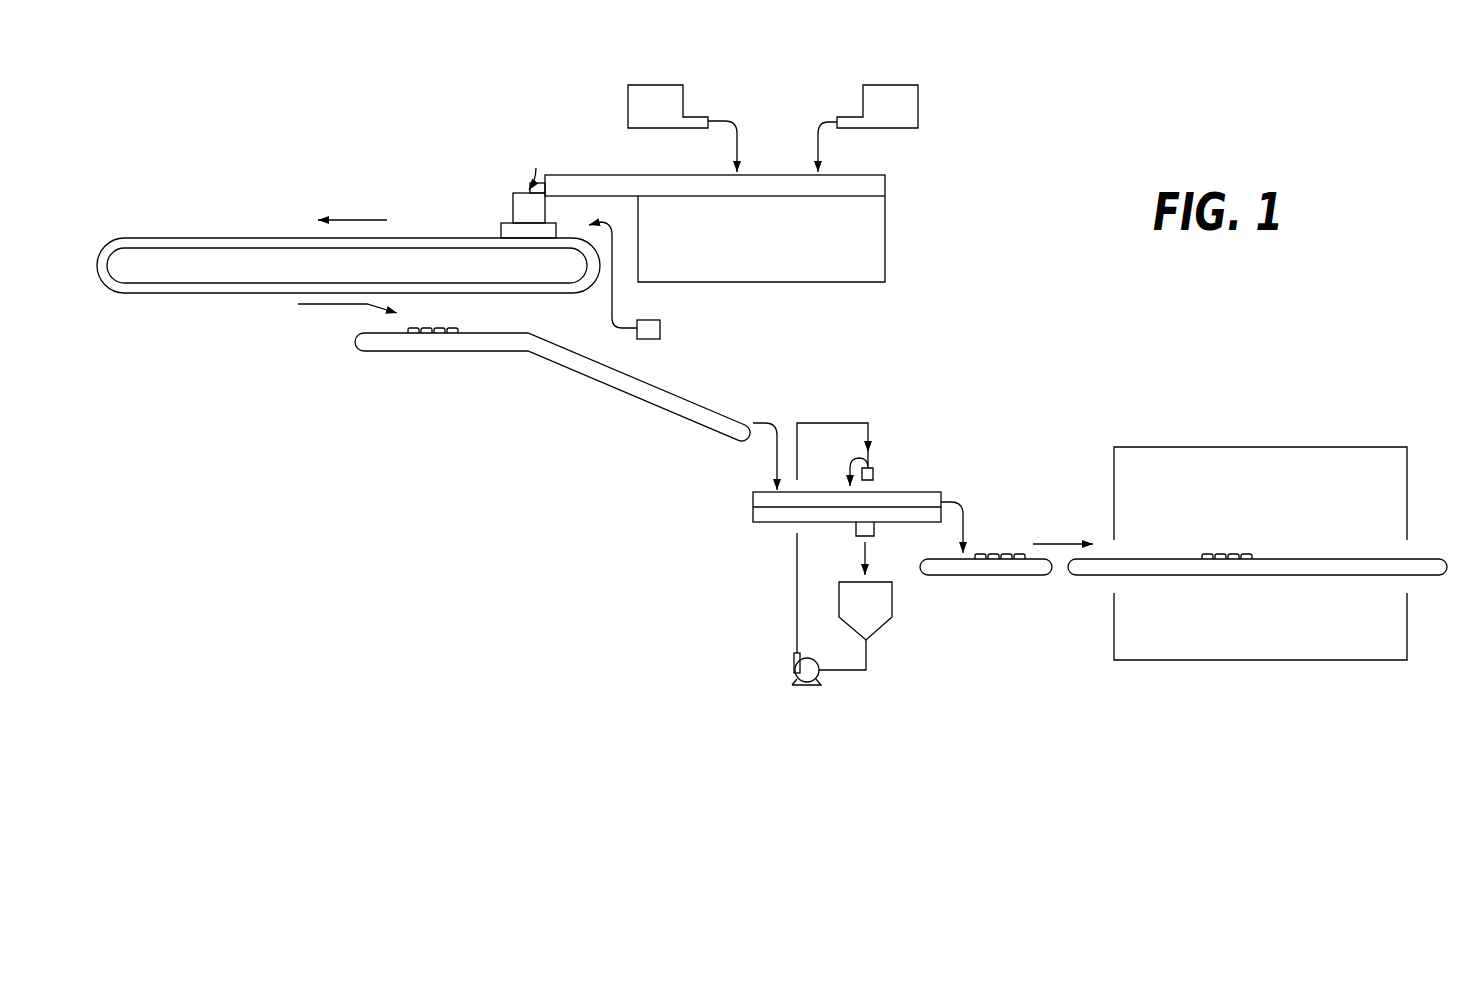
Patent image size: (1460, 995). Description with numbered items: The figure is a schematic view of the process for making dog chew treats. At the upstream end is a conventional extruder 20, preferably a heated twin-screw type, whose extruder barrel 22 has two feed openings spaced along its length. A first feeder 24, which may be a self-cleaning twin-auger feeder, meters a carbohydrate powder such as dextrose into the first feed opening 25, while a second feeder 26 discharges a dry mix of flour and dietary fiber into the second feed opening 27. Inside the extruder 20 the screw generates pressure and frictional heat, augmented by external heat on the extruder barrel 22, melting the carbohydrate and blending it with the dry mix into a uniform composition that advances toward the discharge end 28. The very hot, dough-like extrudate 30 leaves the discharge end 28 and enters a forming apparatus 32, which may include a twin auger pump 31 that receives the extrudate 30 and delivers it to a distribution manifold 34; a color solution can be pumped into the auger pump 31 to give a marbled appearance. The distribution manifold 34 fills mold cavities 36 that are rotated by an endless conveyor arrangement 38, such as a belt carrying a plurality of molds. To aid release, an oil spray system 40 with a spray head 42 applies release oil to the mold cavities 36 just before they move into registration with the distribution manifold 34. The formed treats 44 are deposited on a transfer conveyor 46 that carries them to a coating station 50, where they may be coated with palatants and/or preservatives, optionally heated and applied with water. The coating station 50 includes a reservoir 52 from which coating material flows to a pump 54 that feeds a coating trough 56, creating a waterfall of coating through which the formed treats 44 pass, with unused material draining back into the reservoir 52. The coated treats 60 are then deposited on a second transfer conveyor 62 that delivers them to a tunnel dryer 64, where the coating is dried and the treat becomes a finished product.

The extruder 20 is at (865, 247).
The extruder barrel 22 is at (863, 187).
The first feeder 24 is at (892, 85).
The first feed opening 25 is at (821, 174).
The second feeder 26 is at (645, 85).
The second feed opening 27 is at (744, 172).
The discharge end 28 is at (536, 168).
The extrudate 30 is at (530, 182).
The twin auger pump 31 is at (513, 208).
The forming apparatus 32 is at (230, 262).
The distribution manifold 34 is at (501, 230).
The mold cavities 36 is at (422, 246).
The endless conveyor arrangement 38 is at (167, 238).
The oil spray system 40 is at (660, 328).
The spray head 42 is at (590, 208).
The formed treats 44 is at (425, 333).
The transfer conveyor 46 is at (497, 342).
The coating station 50 is at (928, 498).
The reservoir 52 is at (892, 599).
The pump 54 is at (795, 673).
The coating trough 56 is at (875, 472).
The coated treats 60 is at (993, 553).
The second transfer conveyor 62 is at (1012, 568).
The tunnel dryer 64 is at (1188, 473).